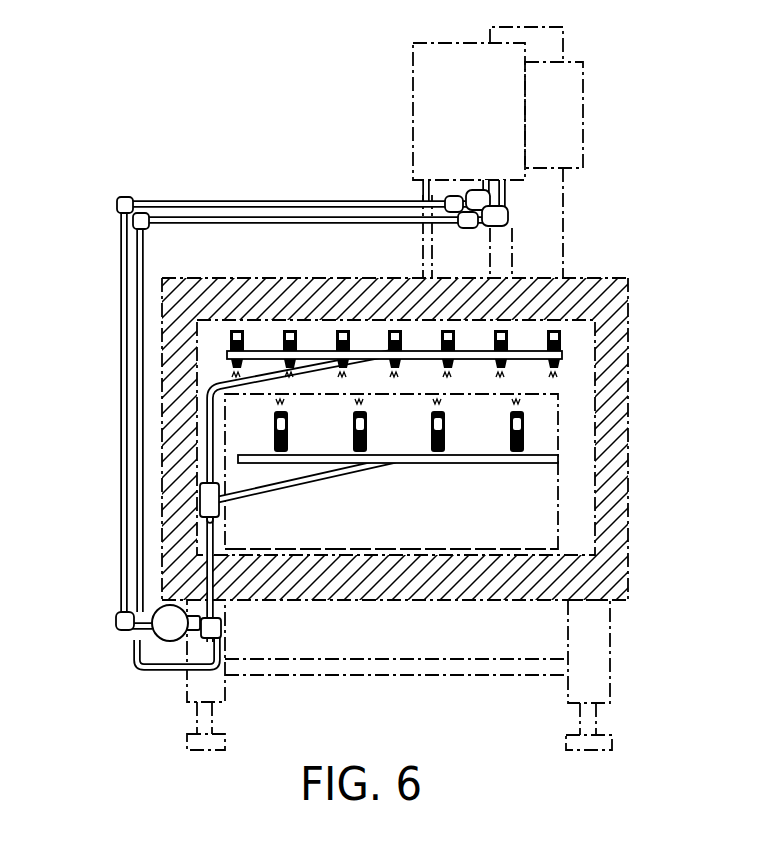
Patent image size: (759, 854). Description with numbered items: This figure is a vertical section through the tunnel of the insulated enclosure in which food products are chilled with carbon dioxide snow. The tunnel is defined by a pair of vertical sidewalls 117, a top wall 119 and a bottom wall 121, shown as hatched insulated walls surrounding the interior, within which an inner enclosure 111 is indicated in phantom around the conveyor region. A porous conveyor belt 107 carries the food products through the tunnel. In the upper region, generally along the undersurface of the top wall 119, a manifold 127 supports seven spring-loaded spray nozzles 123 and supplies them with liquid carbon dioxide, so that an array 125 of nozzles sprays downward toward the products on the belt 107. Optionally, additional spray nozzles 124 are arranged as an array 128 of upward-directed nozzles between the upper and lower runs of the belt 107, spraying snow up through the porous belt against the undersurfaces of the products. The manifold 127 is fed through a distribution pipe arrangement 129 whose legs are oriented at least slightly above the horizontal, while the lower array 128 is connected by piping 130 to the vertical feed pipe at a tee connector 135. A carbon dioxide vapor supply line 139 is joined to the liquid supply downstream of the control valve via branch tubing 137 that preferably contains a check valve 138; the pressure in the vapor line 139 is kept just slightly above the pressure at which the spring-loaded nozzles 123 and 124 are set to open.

The conveyor belt 107 is at (400, 546).
The inner enclosure 111 is at (320, 397).
The vertical sidewalls 117 is at (177, 359).
The top wall 119 is at (383, 292).
The bottom wall 121 is at (405, 587).
The spray nozzles 123 is at (458, 332).
The additional spray nozzles 124 is at (430, 443).
The arrays of spray nozzles 125 is at (555, 374).
The manifold 127 is at (416, 356).
The arrays of upward-directed nozzles 128 is at (440, 465).
The distribution pipe arrangement 129 is at (265, 387).
The piping 130 is at (312, 483).
The tee connectors 135 is at (200, 505).
The branch tubing 137 is at (137, 621).
The check valve 138 is at (177, 670).
The CO2 vapor supply line 139 is at (121, 424).